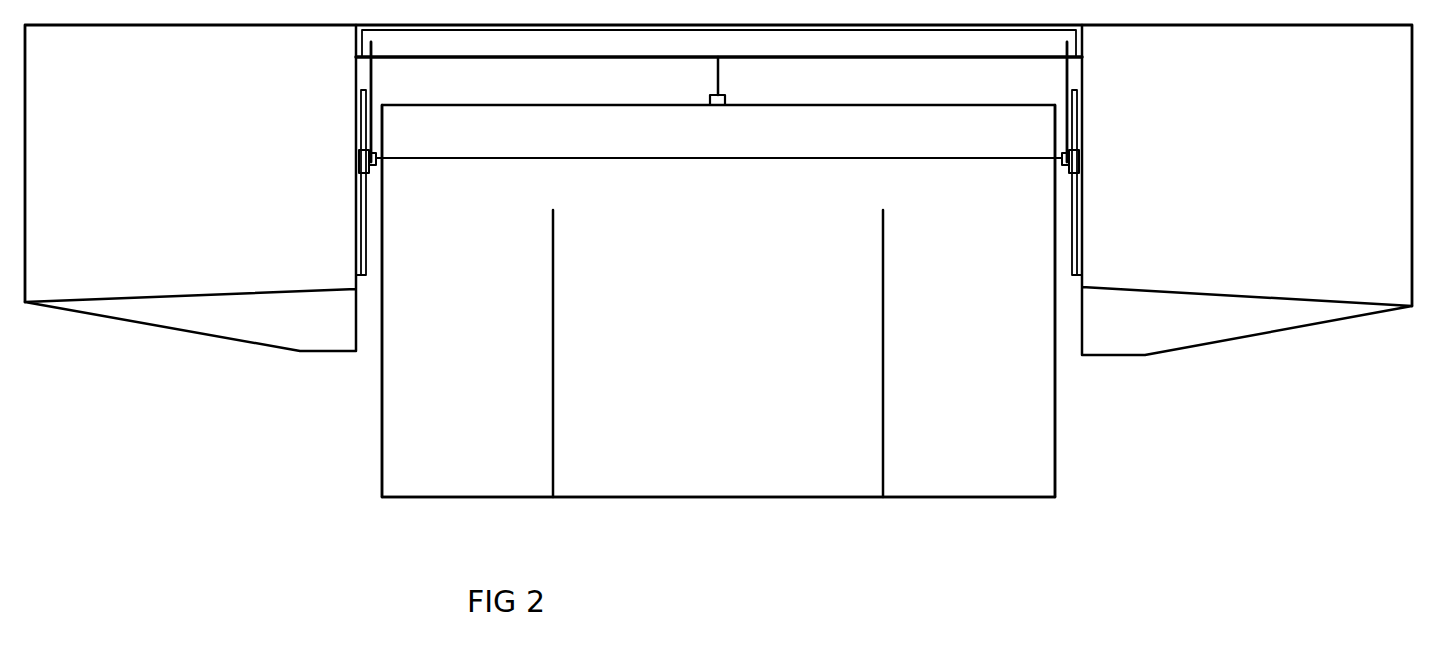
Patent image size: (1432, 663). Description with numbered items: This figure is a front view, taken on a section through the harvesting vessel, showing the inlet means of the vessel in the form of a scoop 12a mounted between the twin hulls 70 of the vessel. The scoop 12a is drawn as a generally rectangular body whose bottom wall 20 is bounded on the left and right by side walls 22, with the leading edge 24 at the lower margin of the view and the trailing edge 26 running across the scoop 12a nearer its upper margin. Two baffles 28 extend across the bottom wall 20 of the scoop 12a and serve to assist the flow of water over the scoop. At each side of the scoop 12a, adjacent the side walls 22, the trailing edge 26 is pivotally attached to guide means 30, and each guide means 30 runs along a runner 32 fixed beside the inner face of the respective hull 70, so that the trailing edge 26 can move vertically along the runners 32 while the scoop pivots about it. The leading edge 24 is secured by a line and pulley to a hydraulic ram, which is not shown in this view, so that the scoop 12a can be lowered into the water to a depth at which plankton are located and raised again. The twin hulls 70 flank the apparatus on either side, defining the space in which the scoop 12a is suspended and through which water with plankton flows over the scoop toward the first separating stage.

The scoop 12a is at (433, 450).
The bottom wall 20 is at (1017, 408).
The side walls 22 is at (382, 429).
The leading edge 24 is at (729, 498).
The trailing edge 26 is at (911, 125).
The baffles 28 is at (883, 478).
The guide means 30 is at (361, 163).
The runners 32 is at (361, 108).
The twin hulls 70 is at (143, 282).